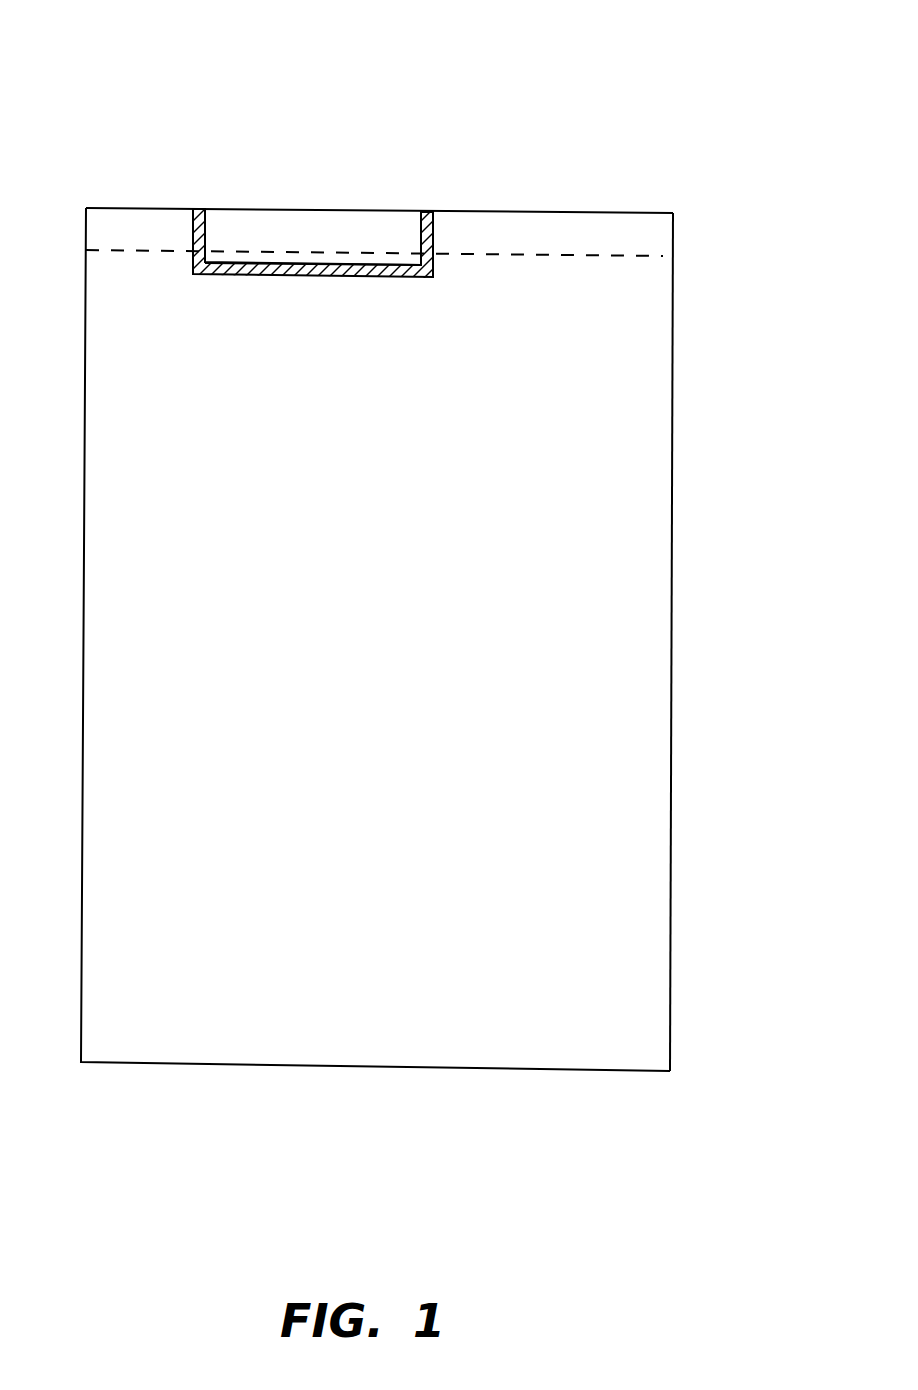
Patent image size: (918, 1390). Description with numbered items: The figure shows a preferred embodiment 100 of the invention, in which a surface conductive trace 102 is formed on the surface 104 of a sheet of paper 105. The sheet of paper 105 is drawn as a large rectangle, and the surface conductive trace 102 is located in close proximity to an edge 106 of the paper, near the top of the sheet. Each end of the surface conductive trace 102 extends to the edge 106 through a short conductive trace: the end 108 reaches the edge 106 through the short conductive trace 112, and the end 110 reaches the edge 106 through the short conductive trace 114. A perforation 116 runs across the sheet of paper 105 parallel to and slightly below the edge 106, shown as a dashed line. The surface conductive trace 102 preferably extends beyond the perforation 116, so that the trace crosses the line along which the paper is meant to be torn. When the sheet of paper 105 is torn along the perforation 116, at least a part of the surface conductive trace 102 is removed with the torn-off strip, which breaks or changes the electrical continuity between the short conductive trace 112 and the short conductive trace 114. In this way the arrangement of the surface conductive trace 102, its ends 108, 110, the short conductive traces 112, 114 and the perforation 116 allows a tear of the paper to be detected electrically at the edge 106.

The preferred embodiment 100 is at (437, 537).
The surface conductive trace 102 is at (327, 263).
The surface 104 is at (642, 482).
The sheet of paper 105 is at (671, 742).
The edge 106 is at (588, 213).
The end 108 is at (256, 262).
The end 110 is at (407, 265).
The short conductive trace 112 is at (193, 233).
The short conductive trace 114 is at (428, 238).
The perforation 116 is at (600, 257).